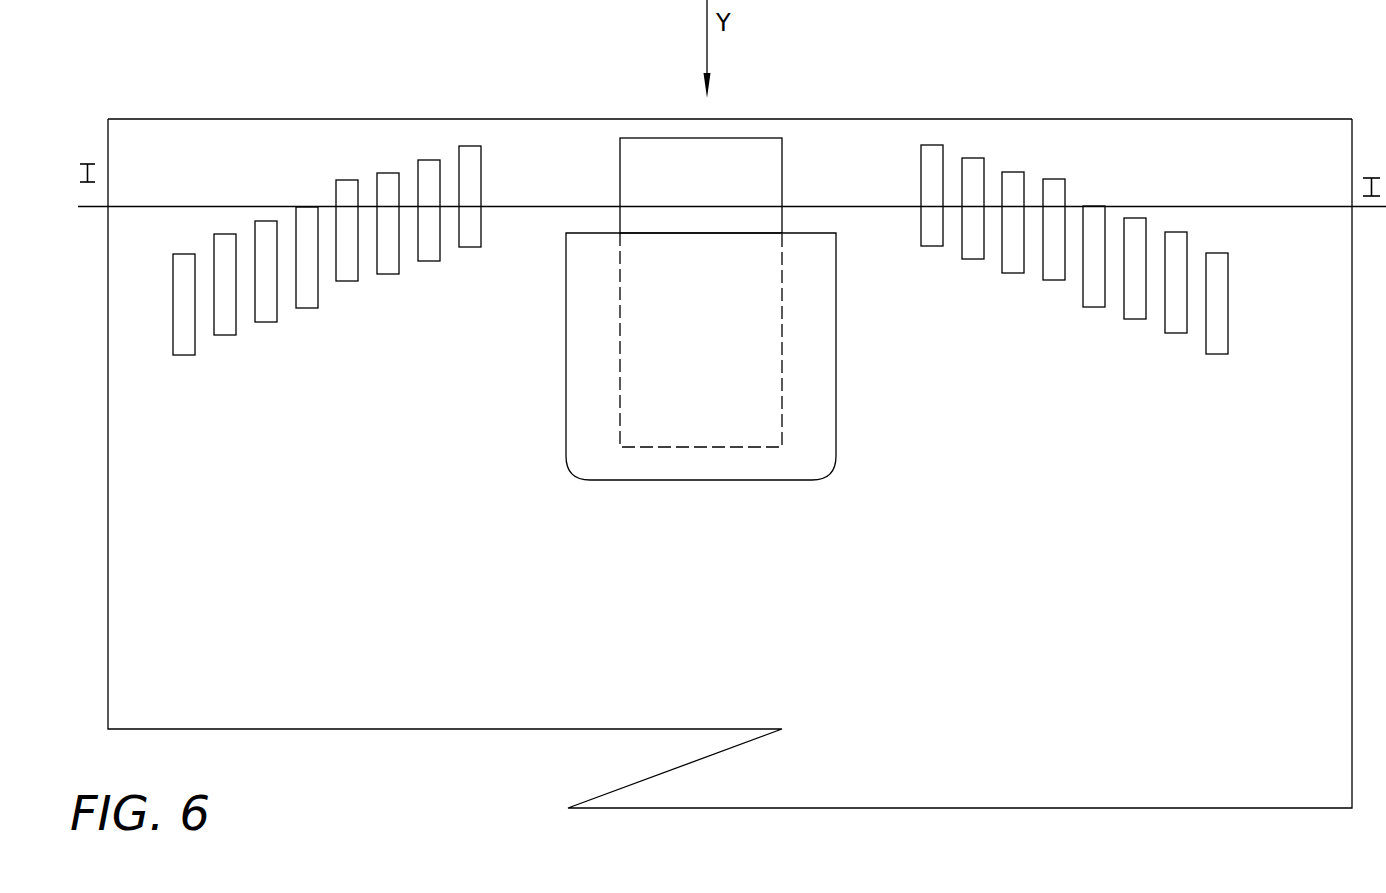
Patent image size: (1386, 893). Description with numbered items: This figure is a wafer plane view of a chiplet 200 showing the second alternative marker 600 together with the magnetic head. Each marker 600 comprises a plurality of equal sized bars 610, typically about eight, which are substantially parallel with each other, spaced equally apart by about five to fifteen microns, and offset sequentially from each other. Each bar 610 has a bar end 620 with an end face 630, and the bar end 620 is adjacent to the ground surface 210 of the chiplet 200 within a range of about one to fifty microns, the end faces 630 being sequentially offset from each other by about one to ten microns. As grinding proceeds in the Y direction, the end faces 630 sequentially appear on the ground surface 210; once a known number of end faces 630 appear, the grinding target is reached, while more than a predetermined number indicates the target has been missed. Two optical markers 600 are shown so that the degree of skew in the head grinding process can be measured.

The chiplet 200 is at (350, 753).
The ground surface 210 is at (1308, 118).
The second alternative marker 600 is at (705, 213).
The bars 610 is at (470, 178).
The bar end 620 is at (489, 163).
The end face 630 is at (489, 159).